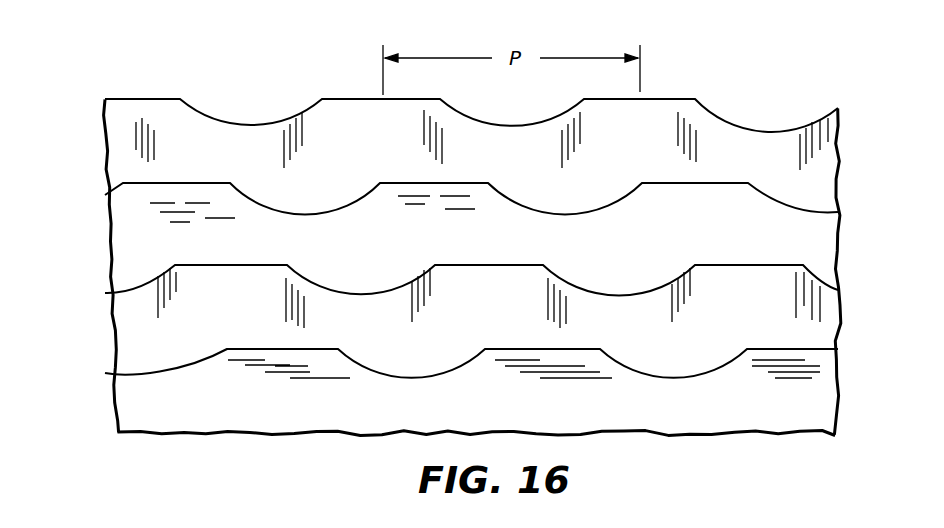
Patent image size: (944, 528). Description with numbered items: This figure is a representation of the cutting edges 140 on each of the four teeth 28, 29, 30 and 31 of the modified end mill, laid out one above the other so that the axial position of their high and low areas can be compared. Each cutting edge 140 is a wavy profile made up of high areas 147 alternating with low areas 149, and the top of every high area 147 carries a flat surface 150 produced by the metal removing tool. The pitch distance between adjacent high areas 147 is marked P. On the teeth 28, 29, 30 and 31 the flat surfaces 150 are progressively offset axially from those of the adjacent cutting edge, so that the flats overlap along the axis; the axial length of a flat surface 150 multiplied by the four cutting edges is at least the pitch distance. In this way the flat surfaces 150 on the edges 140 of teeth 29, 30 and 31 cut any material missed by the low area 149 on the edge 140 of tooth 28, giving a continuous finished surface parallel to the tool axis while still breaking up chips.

The tooth 28 is at (112, 143).
The tooth 29 is at (120, 260).
The tooth 30 is at (125, 332).
The tooth 31 is at (128, 400).
The cutting edge 140 is at (128, 99).
The high area 147 is at (322, 99).
The low area 149 is at (238, 125).
The flat surface 150 is at (363, 96).